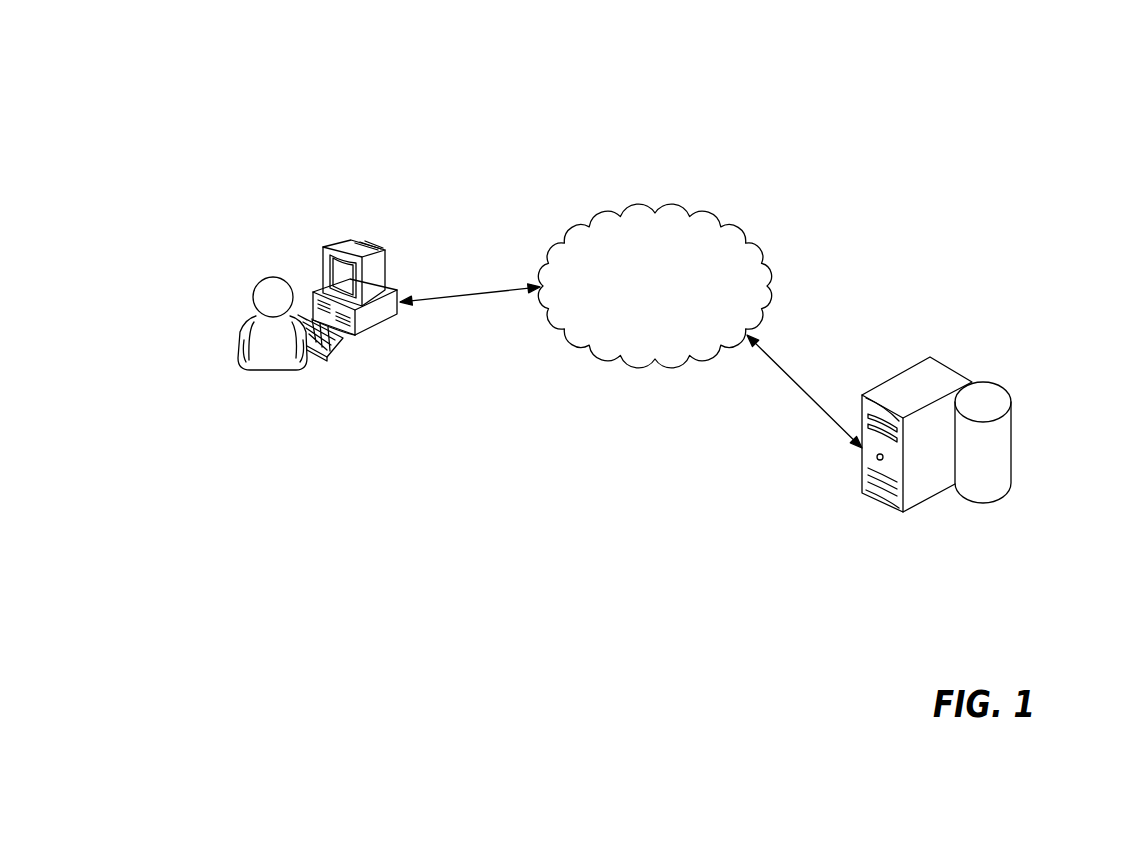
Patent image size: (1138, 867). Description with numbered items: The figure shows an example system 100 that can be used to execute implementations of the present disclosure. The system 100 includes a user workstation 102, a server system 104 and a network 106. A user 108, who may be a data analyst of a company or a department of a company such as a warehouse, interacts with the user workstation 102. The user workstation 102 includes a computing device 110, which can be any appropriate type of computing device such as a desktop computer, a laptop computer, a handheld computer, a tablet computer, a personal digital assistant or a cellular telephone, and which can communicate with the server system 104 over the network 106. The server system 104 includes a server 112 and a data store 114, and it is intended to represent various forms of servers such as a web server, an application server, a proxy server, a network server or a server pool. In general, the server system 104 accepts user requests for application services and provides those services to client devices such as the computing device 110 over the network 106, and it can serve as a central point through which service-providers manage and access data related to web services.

The system 100 is at (647, 98).
The user workstation 102 is at (383, 220).
The server system 104 is at (1053, 457).
The network 106 is at (655, 212).
The user 108 is at (262, 372).
The computing device 110 is at (400, 290).
The server 112 is at (1010, 398).
The data store 114 is at (955, 363).